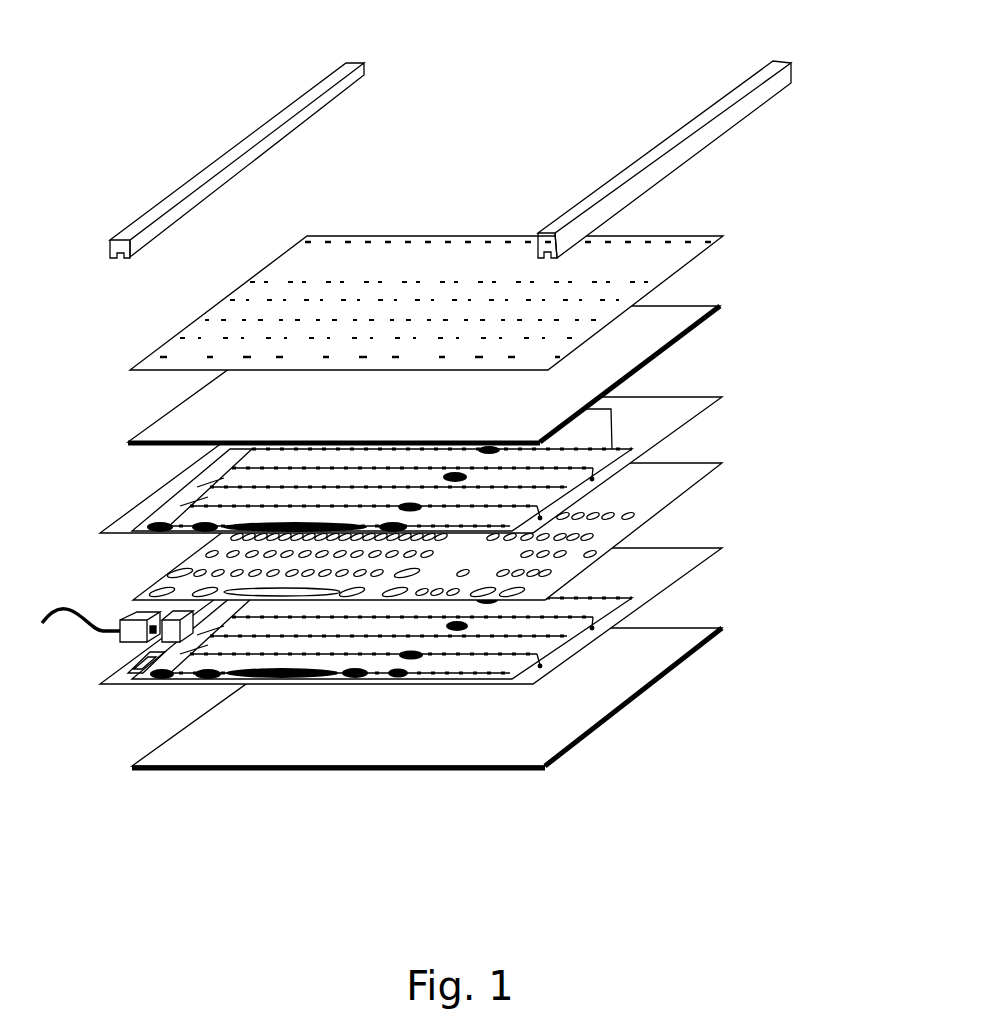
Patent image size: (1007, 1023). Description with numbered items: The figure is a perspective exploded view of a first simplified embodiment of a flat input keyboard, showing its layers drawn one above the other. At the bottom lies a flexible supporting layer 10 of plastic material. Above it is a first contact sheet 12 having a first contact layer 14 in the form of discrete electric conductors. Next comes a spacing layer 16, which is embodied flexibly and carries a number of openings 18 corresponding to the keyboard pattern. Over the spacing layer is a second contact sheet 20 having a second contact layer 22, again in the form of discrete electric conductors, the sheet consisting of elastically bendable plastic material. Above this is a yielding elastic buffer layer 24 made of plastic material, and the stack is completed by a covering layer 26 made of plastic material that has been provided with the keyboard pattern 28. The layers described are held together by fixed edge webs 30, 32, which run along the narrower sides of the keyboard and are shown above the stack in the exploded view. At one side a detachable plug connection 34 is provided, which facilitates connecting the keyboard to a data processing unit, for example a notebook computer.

The flexible supporting layer 10 is at (590, 713).
The first contact sheet 12 is at (662, 571).
The first contact layer 14 is at (640, 601).
The spacing layer 16 is at (662, 484).
The openings 18 is at (636, 515).
The second contact sheet 20 is at (654, 433).
The second contact layer 22 is at (614, 416).
The yielding elastic buffer layer 24 is at (657, 324).
The covering layer 26 is at (652, 256).
The keyboard pattern 28 is at (433, 265).
The fixed edge web 30 is at (205, 178).
The fixed edge web 32 is at (737, 108).
The detachable plug connection 34 is at (103, 633).